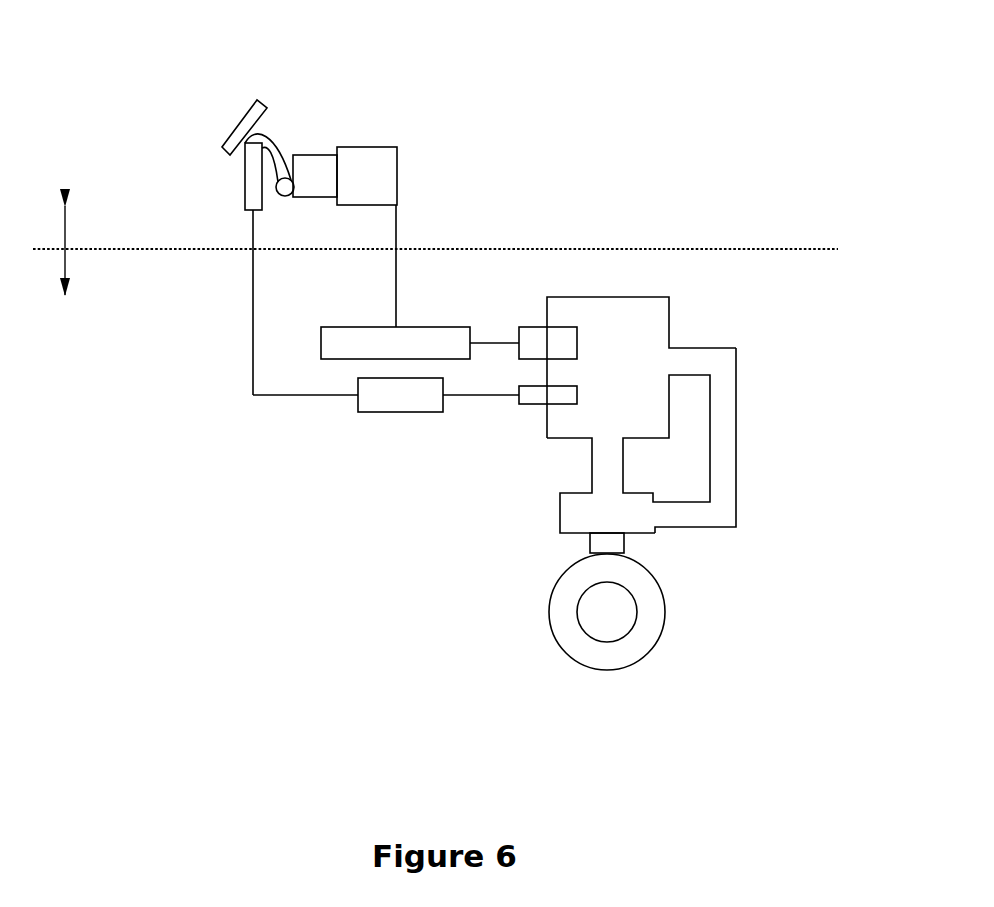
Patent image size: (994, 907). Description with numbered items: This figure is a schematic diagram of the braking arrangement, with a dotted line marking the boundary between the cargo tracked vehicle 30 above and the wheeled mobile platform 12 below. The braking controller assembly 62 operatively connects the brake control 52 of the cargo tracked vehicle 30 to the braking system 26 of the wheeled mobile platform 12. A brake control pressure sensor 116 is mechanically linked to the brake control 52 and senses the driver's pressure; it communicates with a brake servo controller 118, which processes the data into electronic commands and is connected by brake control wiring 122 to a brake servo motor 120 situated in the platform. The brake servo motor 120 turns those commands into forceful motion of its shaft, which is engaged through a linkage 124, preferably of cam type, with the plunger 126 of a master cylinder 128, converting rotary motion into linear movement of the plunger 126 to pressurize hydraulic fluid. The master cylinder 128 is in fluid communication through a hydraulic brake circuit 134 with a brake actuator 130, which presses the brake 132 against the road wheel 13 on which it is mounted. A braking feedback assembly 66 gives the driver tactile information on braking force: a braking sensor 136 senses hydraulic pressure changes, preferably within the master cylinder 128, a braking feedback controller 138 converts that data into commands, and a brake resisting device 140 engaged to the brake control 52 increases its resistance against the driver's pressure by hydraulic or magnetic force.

The wheeled mobile platform 12 is at (63, 299).
The road wheel 13 is at (660, 632).
The braking system 26 is at (753, 542).
The cargo tracked vehicle 30 is at (67, 205).
The brake control 52 is at (258, 98).
The braking controller assembly 62 is at (450, 112).
The braking feedback assembly 66 is at (342, 415).
The brake control pressure sensor 116 is at (303, 155).
The brake servo controller 118 is at (350, 150).
The brake servo motor 120 is at (325, 327).
The brake control wiring 122 is at (397, 233).
The linkage 124 is at (487, 340).
The plunger 126 is at (530, 325).
The master cylinder 128 is at (663, 315).
The brake actuator 130 is at (558, 502).
The brake 132 is at (588, 547).
The hydraulic brake circuit 134 is at (735, 385).
The braking sensor 136 is at (518, 403).
The braking feedback controller 138 is at (400, 413).
The brake resisting device 140 is at (248, 168).